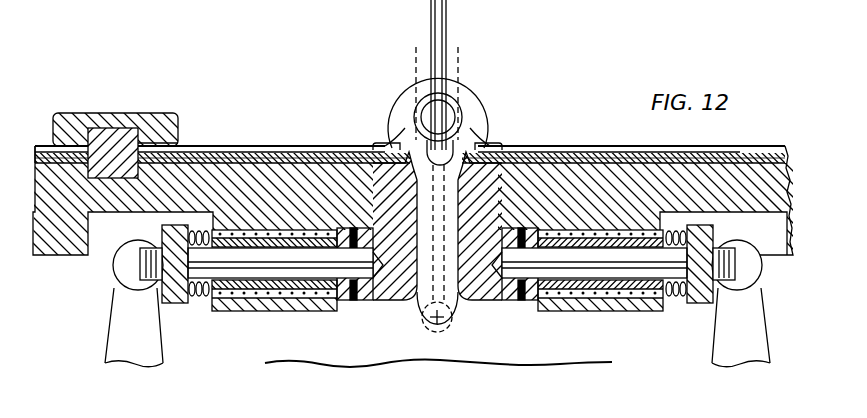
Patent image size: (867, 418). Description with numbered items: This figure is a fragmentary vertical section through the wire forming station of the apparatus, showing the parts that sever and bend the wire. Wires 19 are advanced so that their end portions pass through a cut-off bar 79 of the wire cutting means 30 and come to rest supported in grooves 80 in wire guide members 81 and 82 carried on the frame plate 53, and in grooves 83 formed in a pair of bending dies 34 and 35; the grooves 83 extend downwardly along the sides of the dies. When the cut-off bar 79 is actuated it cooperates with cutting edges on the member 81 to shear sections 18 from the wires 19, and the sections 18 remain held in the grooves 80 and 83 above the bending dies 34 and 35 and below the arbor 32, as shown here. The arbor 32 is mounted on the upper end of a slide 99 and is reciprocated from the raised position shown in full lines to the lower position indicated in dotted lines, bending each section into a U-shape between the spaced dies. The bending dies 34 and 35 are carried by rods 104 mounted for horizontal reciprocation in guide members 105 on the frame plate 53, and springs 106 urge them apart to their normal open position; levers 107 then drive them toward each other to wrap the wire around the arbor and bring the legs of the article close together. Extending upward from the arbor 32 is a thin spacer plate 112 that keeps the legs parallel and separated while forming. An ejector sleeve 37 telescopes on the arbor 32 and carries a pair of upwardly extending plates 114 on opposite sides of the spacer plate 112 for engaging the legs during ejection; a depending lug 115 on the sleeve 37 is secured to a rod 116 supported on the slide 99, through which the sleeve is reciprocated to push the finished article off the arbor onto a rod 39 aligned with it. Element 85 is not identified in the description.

The wire section 18 is at (590, 146).
The wire 19 is at (35, 146).
The wire cutting means 30 is at (177, 80).
The arbor 32 is at (455, 118).
The bending die 34 is at (395, 302).
The bending die 35 is at (492, 302).
The ejector sleeve 37 is at (458, 100).
The rod 39 is at (438, 333).
The frame plate 53 is at (66, 240).
The cut-off bar 79 is at (138, 142).
The groove 80 is at (243, 148).
The wire guide member 81 is at (313, 160).
The wire guide member 82 is at (650, 156).
The groove 83 is at (128, 128).
The clamp block 85 is at (100, 113).
The slide 99 is at (330, 365).
The rod 104 is at (315, 262).
The guide member 105 is at (240, 312).
The spring 106 is at (197, 298).
The lever 107 is at (125, 337).
The spacer plate 112 is at (444, 33).
The plate 114 is at (446, 8).
The depending lug 115 is at (470, 142).
The rod 116 is at (400, 135).